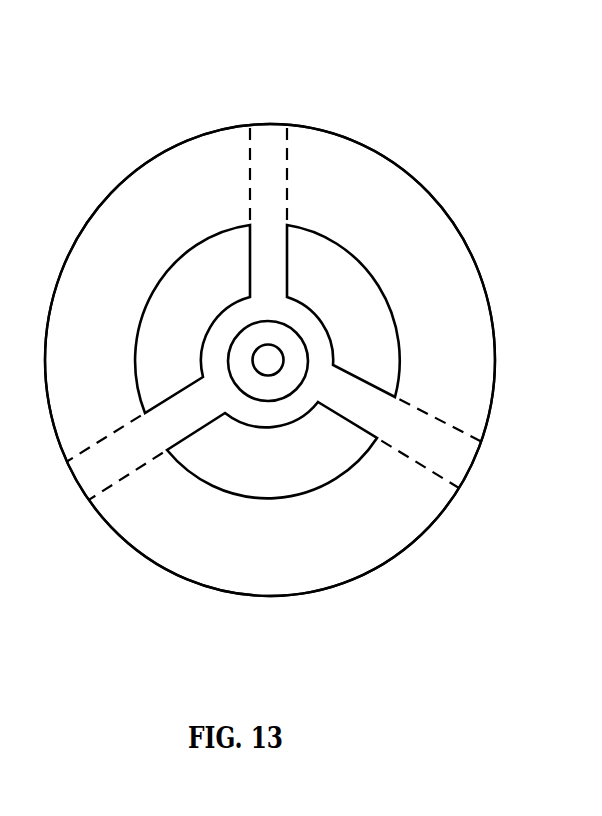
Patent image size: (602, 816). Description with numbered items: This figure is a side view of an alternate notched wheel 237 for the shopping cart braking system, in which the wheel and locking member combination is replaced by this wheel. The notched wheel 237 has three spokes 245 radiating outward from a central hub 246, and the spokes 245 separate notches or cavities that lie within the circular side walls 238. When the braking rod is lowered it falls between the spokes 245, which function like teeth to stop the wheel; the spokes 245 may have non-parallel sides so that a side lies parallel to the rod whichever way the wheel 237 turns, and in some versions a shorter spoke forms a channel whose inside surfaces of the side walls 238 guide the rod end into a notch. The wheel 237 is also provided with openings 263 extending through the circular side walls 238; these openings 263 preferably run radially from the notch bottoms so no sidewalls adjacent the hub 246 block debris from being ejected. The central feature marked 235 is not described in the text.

The notched wheel 237 is at (522, 106).
The circular side walls 238 is at (420, 505).
The openings 263 is at (385, 323).
The spokes 245 is at (270, 130).
The hub 246 is at (257, 415).
The central bore 235 is at (283, 358).